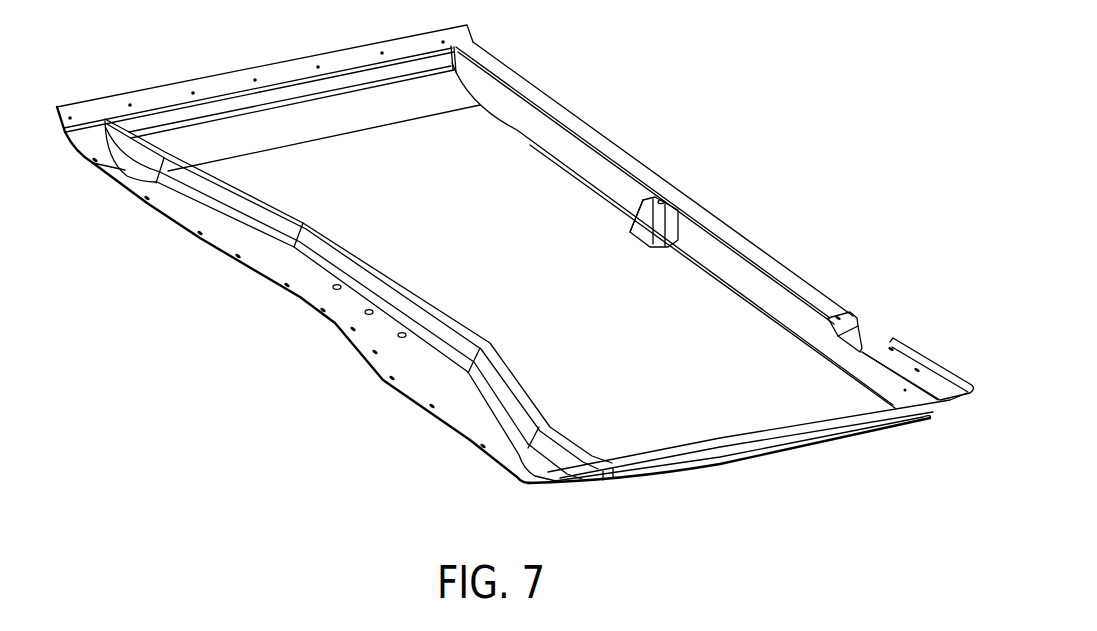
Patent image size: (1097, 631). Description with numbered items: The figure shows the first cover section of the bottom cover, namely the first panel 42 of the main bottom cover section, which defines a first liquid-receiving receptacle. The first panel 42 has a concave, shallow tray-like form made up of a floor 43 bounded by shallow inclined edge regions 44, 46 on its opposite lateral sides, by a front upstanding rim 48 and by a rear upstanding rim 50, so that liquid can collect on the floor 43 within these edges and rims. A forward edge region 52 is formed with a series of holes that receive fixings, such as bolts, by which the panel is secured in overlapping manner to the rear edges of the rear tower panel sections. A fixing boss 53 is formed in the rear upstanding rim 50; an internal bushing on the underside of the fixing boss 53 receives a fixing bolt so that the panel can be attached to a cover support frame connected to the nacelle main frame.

The first panel 42 is at (768, 420).
The floor 43 is at (692, 315).
The shallow inclined edge region 44 is at (240, 125).
The shallow inclined edge region 46 is at (648, 443).
The front upstanding rim 48 is at (242, 207).
The rear upstanding rim 50 is at (615, 190).
The forward edge region 52 is at (343, 313).
The fixing boss 53 is at (669, 208).